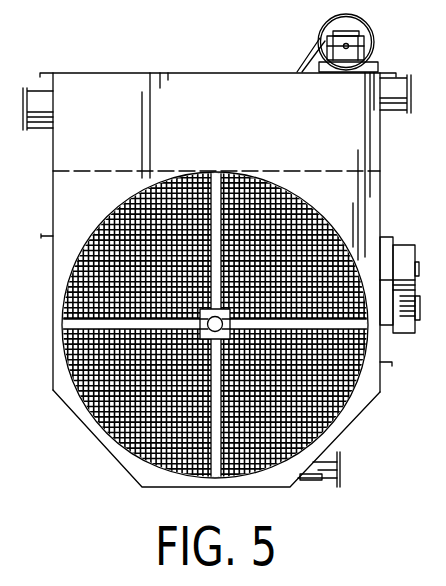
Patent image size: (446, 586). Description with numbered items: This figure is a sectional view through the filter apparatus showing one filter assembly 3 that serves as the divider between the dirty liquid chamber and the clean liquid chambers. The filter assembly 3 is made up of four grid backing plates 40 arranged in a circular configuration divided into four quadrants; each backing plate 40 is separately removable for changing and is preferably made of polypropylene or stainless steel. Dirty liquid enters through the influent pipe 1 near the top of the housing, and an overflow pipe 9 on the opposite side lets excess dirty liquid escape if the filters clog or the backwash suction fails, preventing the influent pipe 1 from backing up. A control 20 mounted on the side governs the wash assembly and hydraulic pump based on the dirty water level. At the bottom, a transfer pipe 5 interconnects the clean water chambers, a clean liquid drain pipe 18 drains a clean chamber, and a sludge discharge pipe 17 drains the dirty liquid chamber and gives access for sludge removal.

The influent pipe 1 is at (24, 88).
The filter assembly 3 is at (100, 240).
The transfer pipe 5 is at (117, 474).
The overflow pipe 9 is at (411, 113).
The sludge discharge pipe 17 is at (345, 460).
The clean liquid drain pipe 18 is at (307, 482).
The control 20 is at (406, 248).
The grid backing plate 40 is at (117, 395).